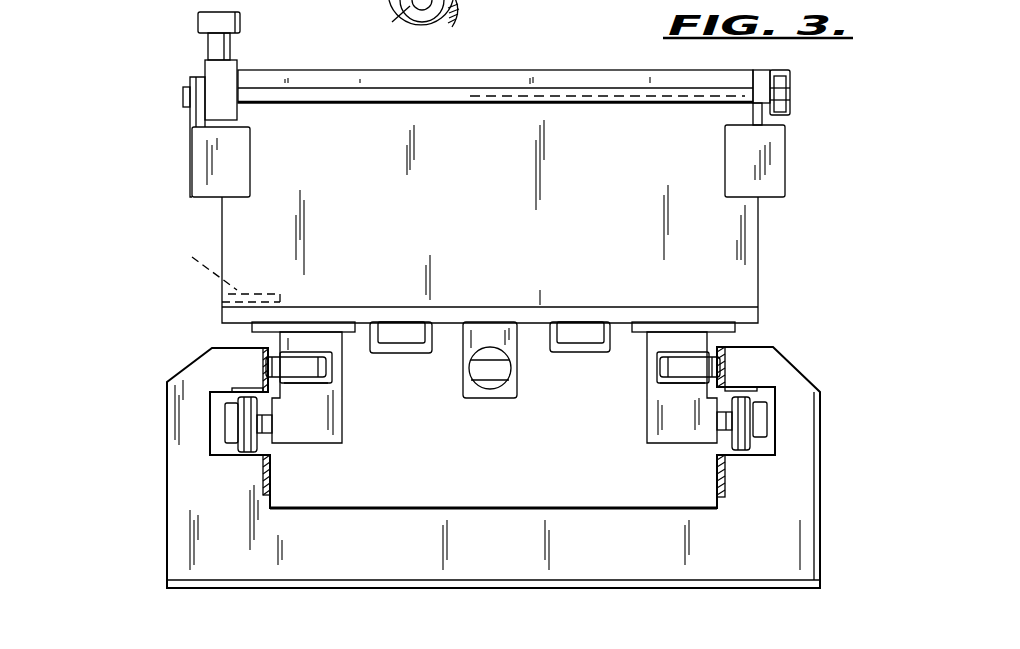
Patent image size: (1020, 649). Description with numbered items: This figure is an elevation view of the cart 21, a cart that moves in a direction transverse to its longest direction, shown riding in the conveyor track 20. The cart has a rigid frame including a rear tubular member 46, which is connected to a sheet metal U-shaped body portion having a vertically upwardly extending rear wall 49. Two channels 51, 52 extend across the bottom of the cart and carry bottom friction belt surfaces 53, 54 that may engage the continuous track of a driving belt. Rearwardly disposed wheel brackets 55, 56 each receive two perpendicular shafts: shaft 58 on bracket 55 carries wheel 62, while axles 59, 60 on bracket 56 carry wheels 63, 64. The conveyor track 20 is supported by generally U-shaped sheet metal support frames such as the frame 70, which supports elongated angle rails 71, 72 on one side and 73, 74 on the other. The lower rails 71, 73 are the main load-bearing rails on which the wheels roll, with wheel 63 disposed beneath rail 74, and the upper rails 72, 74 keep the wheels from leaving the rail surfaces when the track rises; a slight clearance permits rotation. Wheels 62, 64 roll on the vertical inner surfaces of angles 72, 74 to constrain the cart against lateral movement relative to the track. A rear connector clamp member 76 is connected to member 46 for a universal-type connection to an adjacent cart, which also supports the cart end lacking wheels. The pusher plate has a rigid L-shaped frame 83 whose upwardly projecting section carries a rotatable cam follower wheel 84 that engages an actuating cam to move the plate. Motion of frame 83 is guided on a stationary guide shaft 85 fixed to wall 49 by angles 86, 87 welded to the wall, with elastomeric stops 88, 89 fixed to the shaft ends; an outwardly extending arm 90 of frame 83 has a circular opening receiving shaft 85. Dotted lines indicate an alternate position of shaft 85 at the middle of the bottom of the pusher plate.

The conveyor track 20 is at (160, 592).
The cart 21 is at (832, 400).
The rear tubular member 46 is at (548, 305).
The rear wall 49 is at (490, 221).
The channel 51 is at (357, 335).
The channel 52 is at (630, 335).
The bottom friction belt surface 53 is at (420, 355).
The bottom friction belt surface 54 is at (582, 355).
The wheel bracket 55 is at (342, 427).
The wheel bracket 56 is at (665, 425).
The wheel shaft 58 is at (300, 362).
The axle 59 is at (722, 440).
The axle 60 is at (675, 360).
The wheel 62 is at (316, 383).
The wheel 63 is at (740, 455).
The wheel 64 is at (670, 383).
The support frame 70 is at (420, 528).
The angle rail 71 is at (272, 492).
The angle rail 72 is at (256, 392).
The angle rail 73 is at (727, 482).
The angle rail 74 is at (725, 368).
The rear connector clamp member 76 is at (518, 380).
The L-shaped frame 83 is at (208, 46).
The cam follower wheel 84 is at (198, 22).
The guide shaft 85 is at (587, 105).
The angle 86 is at (252, 166).
The angle 87 is at (725, 165).
The elastomeric stop 88 is at (196, 97).
The elastomeric stop 89 is at (786, 100).
The arm 90 is at (205, 66).